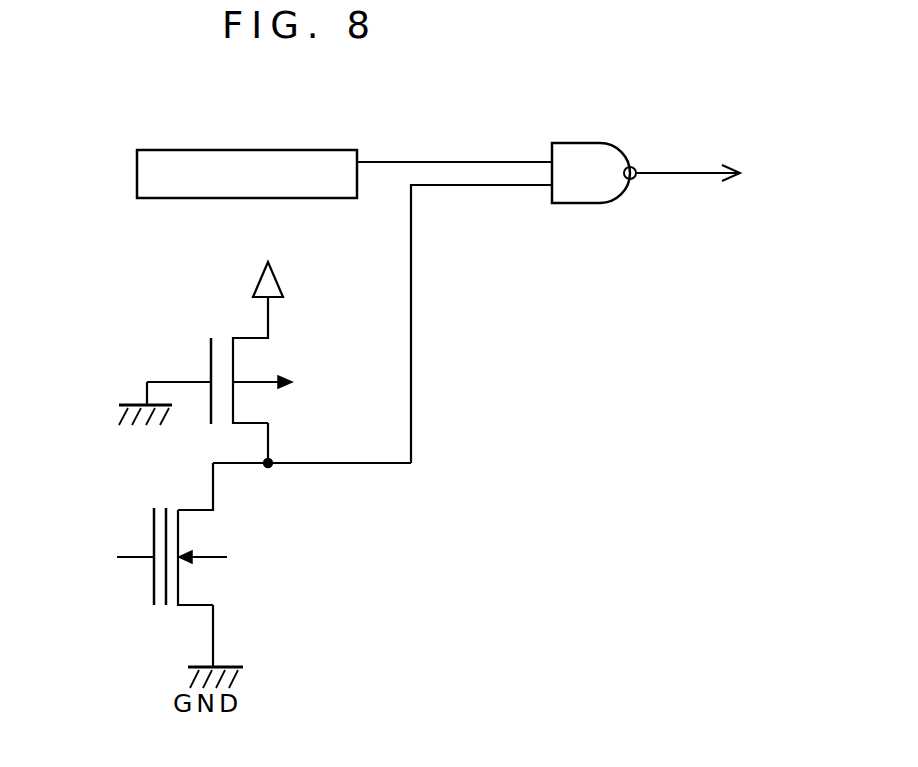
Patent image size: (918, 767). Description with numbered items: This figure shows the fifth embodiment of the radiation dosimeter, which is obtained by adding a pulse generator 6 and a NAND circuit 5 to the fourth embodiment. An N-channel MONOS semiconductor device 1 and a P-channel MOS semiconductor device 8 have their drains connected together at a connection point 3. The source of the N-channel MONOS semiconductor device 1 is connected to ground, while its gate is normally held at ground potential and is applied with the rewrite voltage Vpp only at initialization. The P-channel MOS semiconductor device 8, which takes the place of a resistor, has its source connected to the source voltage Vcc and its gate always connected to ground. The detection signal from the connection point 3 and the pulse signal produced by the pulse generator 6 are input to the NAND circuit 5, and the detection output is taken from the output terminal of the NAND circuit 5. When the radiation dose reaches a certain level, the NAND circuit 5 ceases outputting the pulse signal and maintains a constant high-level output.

The N-channel MONOS semiconductor device 1 is at (140, 595).
The connection point 3 is at (271, 467).
The NAND circuit 5 is at (578, 143).
The pulse generator 6 is at (282, 149).
The P-channel MOS semiconductor device 8 is at (310, 373).